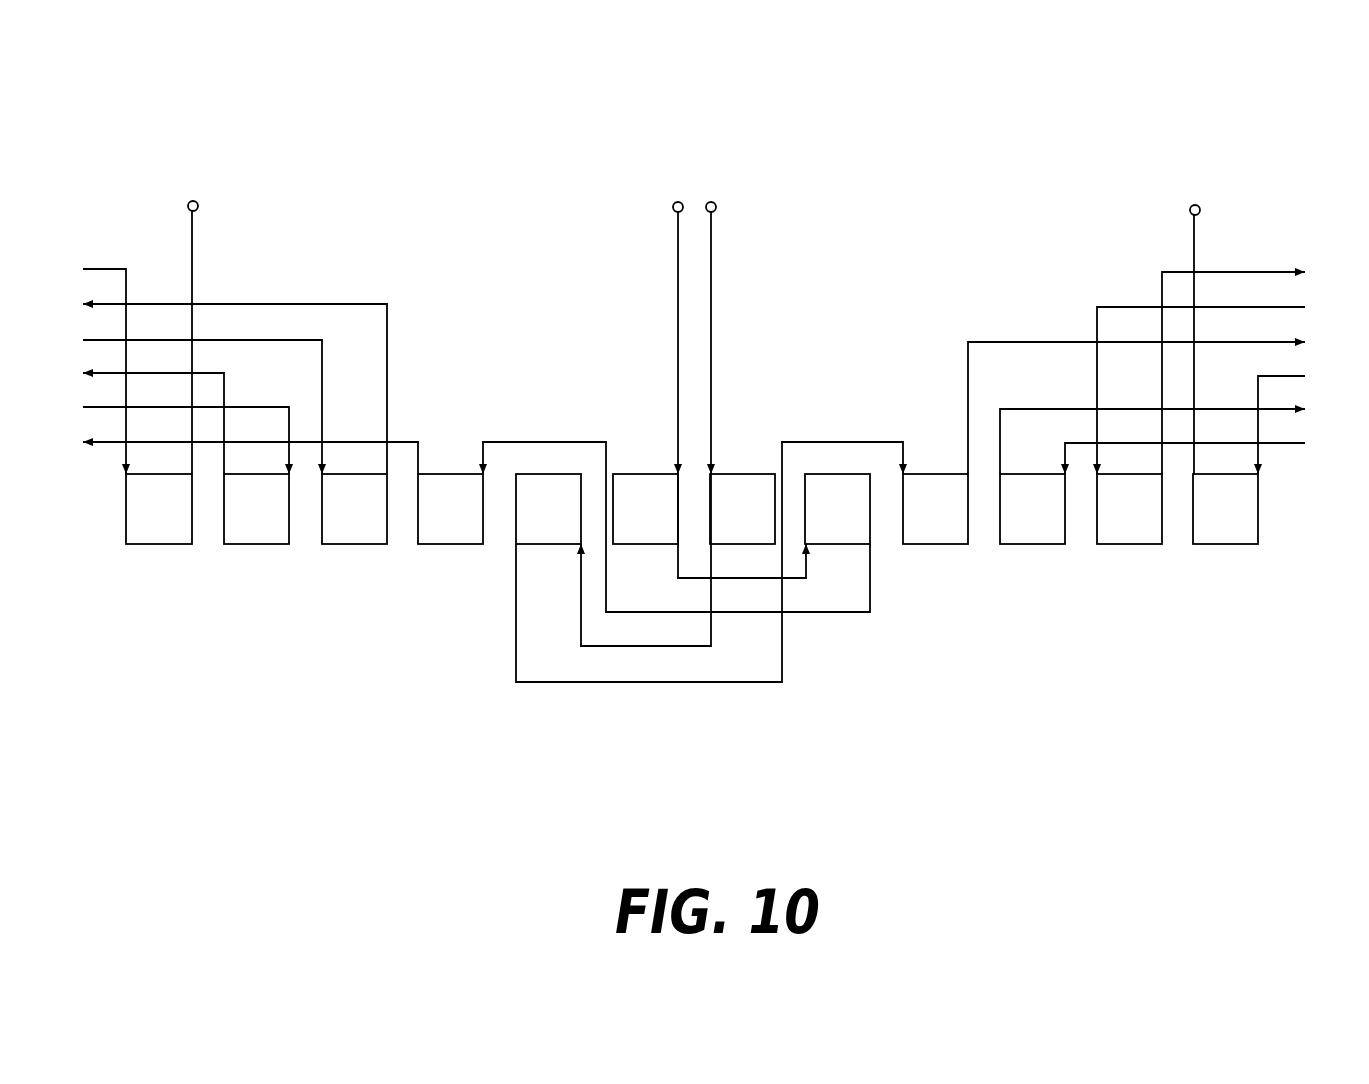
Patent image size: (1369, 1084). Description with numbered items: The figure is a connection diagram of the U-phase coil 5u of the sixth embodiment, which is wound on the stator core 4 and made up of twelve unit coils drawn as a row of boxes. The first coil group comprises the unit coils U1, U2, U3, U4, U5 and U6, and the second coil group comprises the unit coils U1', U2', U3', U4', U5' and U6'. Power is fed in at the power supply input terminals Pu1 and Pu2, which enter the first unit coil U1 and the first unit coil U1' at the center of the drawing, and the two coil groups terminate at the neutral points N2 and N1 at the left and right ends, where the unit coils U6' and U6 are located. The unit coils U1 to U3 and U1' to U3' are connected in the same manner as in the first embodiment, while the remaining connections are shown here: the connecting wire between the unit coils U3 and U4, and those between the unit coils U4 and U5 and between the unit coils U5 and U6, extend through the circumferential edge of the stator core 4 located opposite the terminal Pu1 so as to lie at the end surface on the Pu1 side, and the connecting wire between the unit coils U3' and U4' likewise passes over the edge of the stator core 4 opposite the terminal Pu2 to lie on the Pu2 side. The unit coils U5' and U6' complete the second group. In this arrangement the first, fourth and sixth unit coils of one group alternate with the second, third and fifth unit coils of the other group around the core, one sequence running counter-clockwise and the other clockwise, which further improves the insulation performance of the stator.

The U-phase coil 5u is at (903, 183).
The stator core 4 is at (403, 522).
The neutral point terminal N1 is at (1195, 204).
The neutral point terminal N2 is at (193, 200).
The power supply input terminal Pu1 is at (675, 201).
The power supply input terminal Pu2 is at (714, 201).
The unit coil U1 is at (645, 473).
The unit coil U1' is at (742, 471).
The unit coil U2 is at (837, 462).
The unit coil U2' is at (548, 468).
The unit coil U3 is at (450, 542).
The unit coil U3' is at (935, 554).
The unit coil U4 is at (1032, 548).
The unit coil U4' is at (354, 543).
The unit coil U5 is at (256, 548).
The unit coil U5' is at (1129, 545).
The unit coil U6 is at (1225, 545).
The unit coil U6' is at (159, 548).